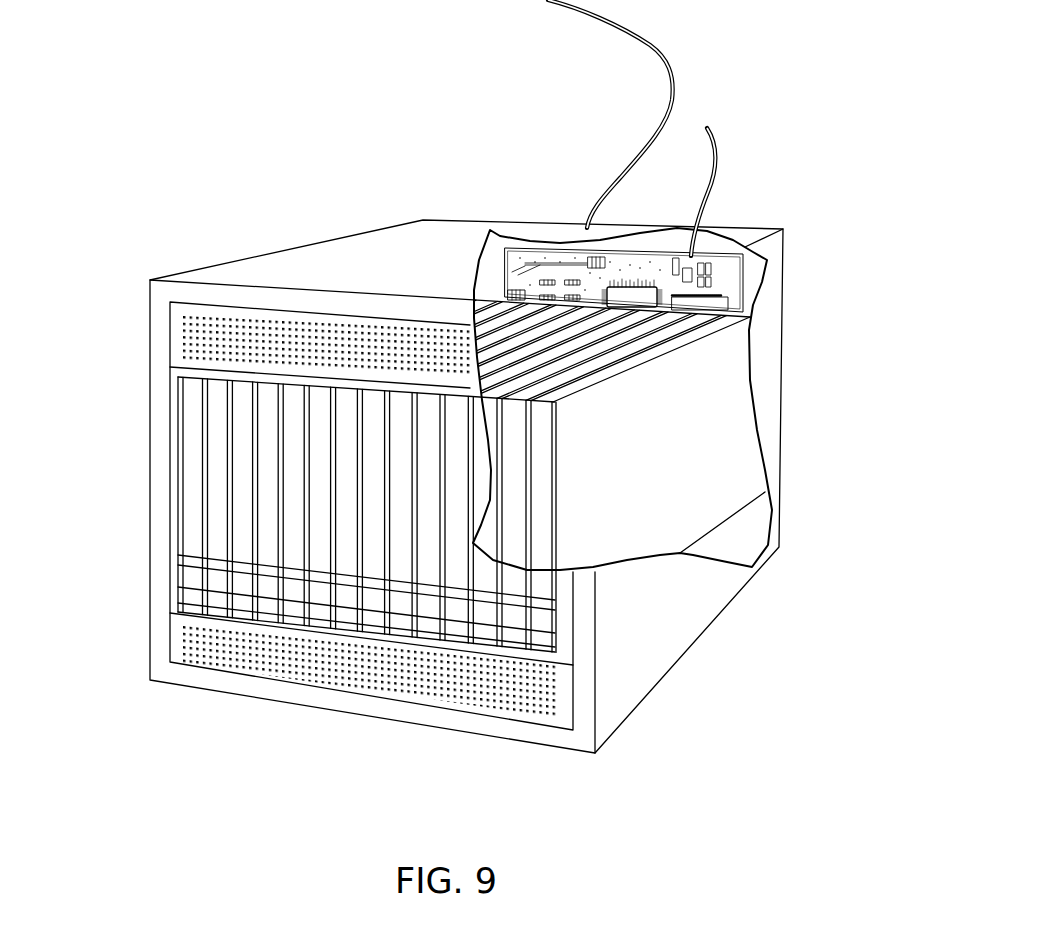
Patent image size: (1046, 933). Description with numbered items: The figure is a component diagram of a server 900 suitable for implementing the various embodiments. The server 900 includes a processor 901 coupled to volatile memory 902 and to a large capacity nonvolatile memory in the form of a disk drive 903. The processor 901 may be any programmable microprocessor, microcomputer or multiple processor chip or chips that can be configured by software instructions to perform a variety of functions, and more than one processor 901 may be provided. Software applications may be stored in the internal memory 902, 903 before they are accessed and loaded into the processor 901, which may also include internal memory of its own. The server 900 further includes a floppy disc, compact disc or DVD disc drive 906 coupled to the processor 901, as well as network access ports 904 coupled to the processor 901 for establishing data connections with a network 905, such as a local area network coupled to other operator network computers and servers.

The server 900 is at (343, 237).
The processor 901 is at (633, 300).
The volatile memory 902 is at (720, 306).
The disk drive 903 is at (242, 447).
The network access ports 904 is at (213, 483).
The network 905 is at (668, 82).
The disc drive 906 is at (508, 293).